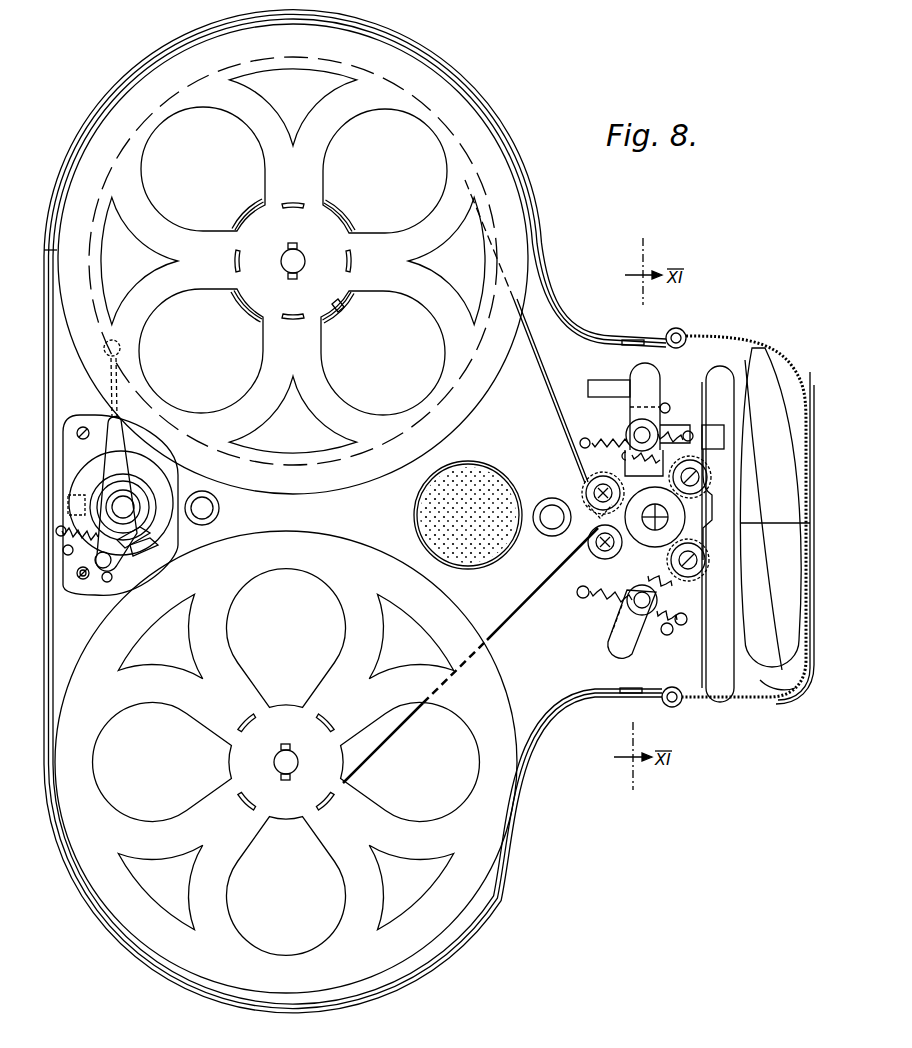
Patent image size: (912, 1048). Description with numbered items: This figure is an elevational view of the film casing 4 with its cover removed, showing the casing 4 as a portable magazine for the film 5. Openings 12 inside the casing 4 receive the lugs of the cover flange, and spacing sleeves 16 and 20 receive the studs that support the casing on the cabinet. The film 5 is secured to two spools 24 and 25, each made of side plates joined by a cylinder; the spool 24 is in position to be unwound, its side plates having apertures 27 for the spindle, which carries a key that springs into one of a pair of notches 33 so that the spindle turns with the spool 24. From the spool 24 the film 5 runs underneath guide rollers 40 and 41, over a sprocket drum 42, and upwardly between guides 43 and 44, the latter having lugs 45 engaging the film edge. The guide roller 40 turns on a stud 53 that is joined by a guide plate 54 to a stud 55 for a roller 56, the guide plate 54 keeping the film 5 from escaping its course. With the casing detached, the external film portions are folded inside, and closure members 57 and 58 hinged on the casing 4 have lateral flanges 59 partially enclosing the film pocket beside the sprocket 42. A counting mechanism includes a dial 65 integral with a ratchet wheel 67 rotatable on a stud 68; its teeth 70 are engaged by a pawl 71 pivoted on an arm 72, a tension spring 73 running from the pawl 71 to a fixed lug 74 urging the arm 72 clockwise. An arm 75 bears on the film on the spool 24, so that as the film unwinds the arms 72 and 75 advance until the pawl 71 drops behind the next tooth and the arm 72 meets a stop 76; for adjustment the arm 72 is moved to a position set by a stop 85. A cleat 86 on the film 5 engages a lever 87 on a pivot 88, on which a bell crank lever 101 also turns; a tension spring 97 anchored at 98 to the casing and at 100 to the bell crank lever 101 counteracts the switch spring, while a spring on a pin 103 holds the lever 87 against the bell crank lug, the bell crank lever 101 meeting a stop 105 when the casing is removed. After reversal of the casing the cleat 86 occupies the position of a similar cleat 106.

The casing 4 is at (547, 698).
The film 5 is at (773, 578).
The openings 12 is at (54, 258).
The spacing sleeve 16 is at (547, 498).
The spacing sleeve 20 is at (220, 508).
The spool 24 is at (293, 273).
The spool 25 is at (286, 762).
The apertures 27 is at (282, 262).
The notches 33 is at (298, 246).
The guide roller 40 is at (602, 478).
The guide roller 41 is at (700, 500).
The sprocket drum 42 is at (655, 516).
The guide 43 is at (693, 350).
The guide 44 is at (717, 483).
The lugs 45 is at (717, 427).
The stud 53 is at (591, 492).
The guide plate 54 is at (600, 523).
The stud 55 is at (610, 550).
The roller 56 is at (597, 552).
The closure member 57 is at (790, 375).
The closure member 58 is at (777, 682).
The lateral flanges 59 is at (740, 353).
The dial 65 is at (85, 467).
The ratchet wheel 67 is at (112, 490).
The stud 68 is at (125, 503).
The teeth 70 is at (144, 535).
The pawl 71 is at (132, 551).
The arm 72 is at (110, 567).
The tension spring 73 is at (69, 555).
The fixed lug 74 is at (60, 536).
The arm 75 is at (117, 453).
The stop 76 is at (82, 578).
The stop 85 is at (107, 582).
The cleat 86 is at (340, 308).
The lever 87 is at (638, 377).
The pivot 88 is at (637, 433).
The tension spring 97 is at (598, 437).
The spring anchorage 98 is at (580, 443).
The spring attachment point 100 is at (687, 431).
The bell crank lever 101 is at (667, 428).
The pin 103 is at (618, 462).
The stop 105 is at (666, 402).
The cleat 106 is at (661, 454).